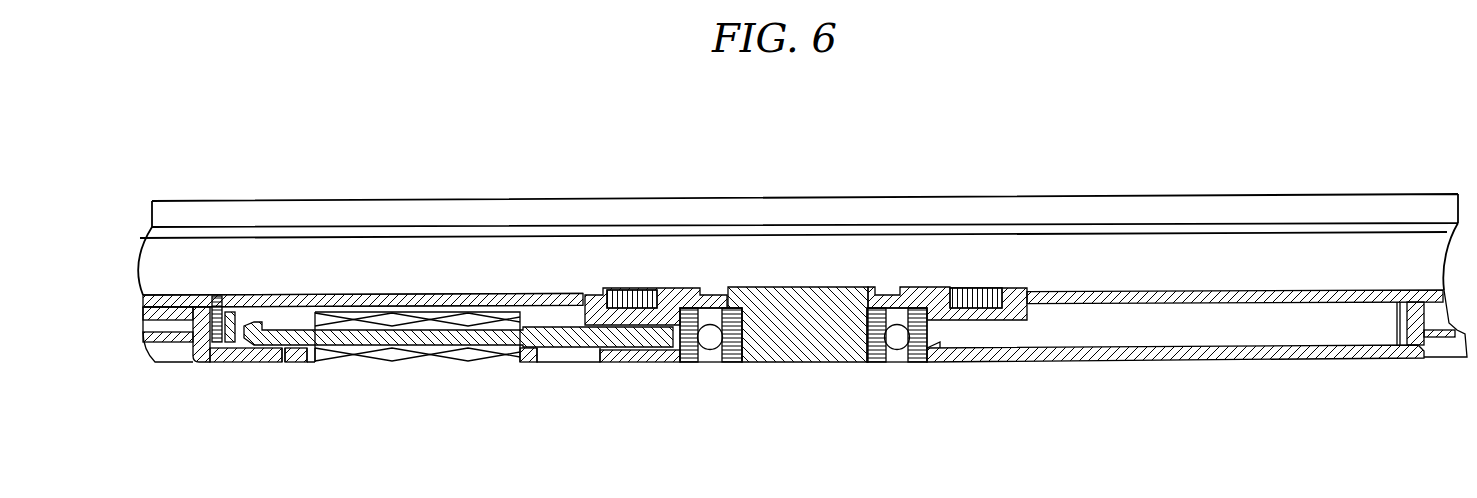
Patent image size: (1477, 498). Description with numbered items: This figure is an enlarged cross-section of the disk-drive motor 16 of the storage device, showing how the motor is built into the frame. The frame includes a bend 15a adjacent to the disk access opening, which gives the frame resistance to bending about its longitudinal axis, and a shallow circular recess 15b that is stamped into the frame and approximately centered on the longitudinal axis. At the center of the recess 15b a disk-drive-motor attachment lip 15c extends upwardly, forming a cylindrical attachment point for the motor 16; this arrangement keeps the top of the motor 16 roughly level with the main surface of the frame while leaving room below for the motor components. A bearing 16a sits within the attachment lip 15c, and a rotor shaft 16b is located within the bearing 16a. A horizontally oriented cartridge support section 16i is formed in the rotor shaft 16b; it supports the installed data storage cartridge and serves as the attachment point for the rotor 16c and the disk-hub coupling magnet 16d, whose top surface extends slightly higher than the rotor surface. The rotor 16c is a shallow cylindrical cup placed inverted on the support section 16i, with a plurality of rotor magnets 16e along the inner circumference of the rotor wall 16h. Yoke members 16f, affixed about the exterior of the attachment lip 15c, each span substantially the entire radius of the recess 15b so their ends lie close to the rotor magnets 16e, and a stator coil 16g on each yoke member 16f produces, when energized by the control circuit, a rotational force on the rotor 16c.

The bend 15a is at (1445, 305).
The recess 15b is at (1272, 352).
The disk-drive-motor attachment lip 15c is at (628, 363).
The motor 16 is at (888, 260).
The bearing 16a is at (710, 363).
The rotor shaft 16b is at (827, 347).
The rotor 16c is at (533, 293).
The disk-hub coupling magnet 16d is at (977, 287).
The rotor magnets 16e is at (226, 312).
The yoke members 16f is at (282, 342).
The stator coil 16g is at (328, 353).
The rotor wall 16h is at (212, 342).
The cartridge support section 16i is at (932, 287).